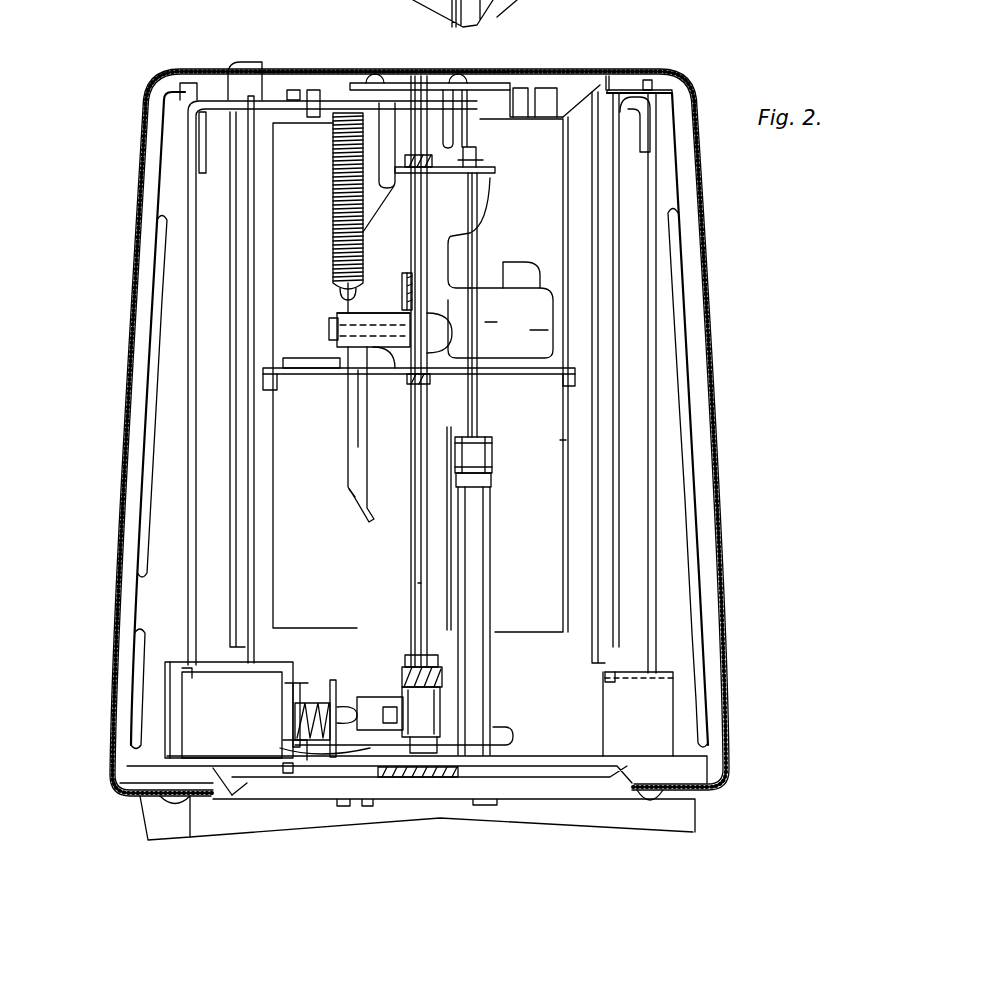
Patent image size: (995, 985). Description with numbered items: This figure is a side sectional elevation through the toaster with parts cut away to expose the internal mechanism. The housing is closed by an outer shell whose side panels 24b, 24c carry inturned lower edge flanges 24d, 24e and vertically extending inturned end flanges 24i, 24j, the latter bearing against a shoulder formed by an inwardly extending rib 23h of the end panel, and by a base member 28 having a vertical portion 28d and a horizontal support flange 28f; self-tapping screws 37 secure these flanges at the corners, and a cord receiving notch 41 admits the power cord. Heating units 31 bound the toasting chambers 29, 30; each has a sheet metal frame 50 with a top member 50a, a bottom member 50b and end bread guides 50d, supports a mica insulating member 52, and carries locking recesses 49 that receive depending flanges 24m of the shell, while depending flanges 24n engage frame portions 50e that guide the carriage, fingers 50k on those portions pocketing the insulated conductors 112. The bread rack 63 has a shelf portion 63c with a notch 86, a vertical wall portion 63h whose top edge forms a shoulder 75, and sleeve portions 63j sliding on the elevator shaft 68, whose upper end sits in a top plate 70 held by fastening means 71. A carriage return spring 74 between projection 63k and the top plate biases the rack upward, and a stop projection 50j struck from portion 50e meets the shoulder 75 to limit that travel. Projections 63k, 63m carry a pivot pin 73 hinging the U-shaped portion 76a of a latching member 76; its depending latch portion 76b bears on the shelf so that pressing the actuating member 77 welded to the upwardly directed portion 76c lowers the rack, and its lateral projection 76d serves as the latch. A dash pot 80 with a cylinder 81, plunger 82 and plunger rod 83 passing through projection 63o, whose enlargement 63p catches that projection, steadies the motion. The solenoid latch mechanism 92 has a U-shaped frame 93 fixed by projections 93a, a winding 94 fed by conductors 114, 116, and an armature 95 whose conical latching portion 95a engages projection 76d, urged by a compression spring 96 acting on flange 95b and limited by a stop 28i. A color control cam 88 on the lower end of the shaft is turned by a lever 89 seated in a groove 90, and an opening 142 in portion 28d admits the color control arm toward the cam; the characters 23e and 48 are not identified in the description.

The base flange 23e is at (700, 770).
The inwardly extending rib 23h is at (146, 480).
The side panel 24b is at (133, 317).
The side panel 24c is at (709, 262).
The inturned lower edge flange 24d is at (115, 796).
The inturned lower edge flange 24e is at (726, 790).
The inturned end flange 24i is at (134, 555).
The inturned end flange 24j is at (717, 537).
The depending flanges 24m is at (616, 90).
The depending flanges 24n is at (547, 76).
The base member 28 is at (689, 722).
The vertical portion 28d is at (667, 690).
The horizontal support flange 28f is at (570, 766).
The stop 28i is at (340, 770).
The toasting chamber 29 is at (265, 457).
The toasting chamber 30 is at (578, 473).
The heating units 31 is at (208, 408).
The self-tapping screws 37 is at (190, 800).
The cord receiving notch 41 is at (421, 806).
The bracket 48 is at (245, 785).
The locking recesses 49 is at (236, 88).
The rectangular frame 50 is at (233, 190).
The top member 50a is at (623, 90).
The bottom member 50b is at (640, 678).
The end bread guides 50d is at (240, 160).
The frame portions 50e is at (508, 497).
The stop projection 50j is at (505, 265).
The finger members 50k is at (318, 88).
The insulating member 52 is at (190, 340).
The bread supporting rack 63 is at (265, 368).
The end member shelf portion 63c is at (500, 375).
The vertical wall portion 63h is at (490, 181).
The sleeve portions 63j is at (430, 380).
The vertical projection 63k is at (345, 295).
The vertical projection 63m is at (431, 300).
The projection 63o is at (480, 165).
The projections 63p is at (430, 217).
The carriage support post 68 is at (418, 583).
The top plate 70 is at (395, 85).
The fastening means 71 is at (365, 78).
The pivot pin 73 is at (337, 328).
The carriage return spring 74 is at (335, 205).
The shoulder 75 is at (500, 322).
The latching member 76 is at (350, 395).
The U-shaped portion 76a is at (345, 308).
The depending latch portion 76b is at (353, 430).
The upwardly directed portion 76c is at (402, 280).
The lateral projection 76d is at (357, 510).
The actuating member 77 is at (382, 168).
The dash pot mechanism 80 is at (502, 467).
The cylinder 81 is at (483, 717).
The dash pot plunger 82 is at (500, 438).
The plunger rod 83 is at (480, 228).
The notch 86 is at (493, 356).
The color control cam 88 is at (432, 713).
The actuating lever 89 is at (415, 687).
The groove 90 is at (407, 653).
The solenoid latch mechanism 92 is at (220, 708).
The U-shaped support frame 93 is at (175, 660).
The projections 93a is at (290, 767).
The solenoid winding 94 is at (213, 747).
The armature 95 is at (295, 717).
The latching portion 95a is at (347, 705).
The washer or flange 95b is at (333, 680).
The compression spring 96 is at (303, 683).
The insulated conductors 112 is at (262, 95).
The conductor 114 is at (180, 648).
The conductor 116 is at (305, 745).
The opening 142 is at (385, 724).